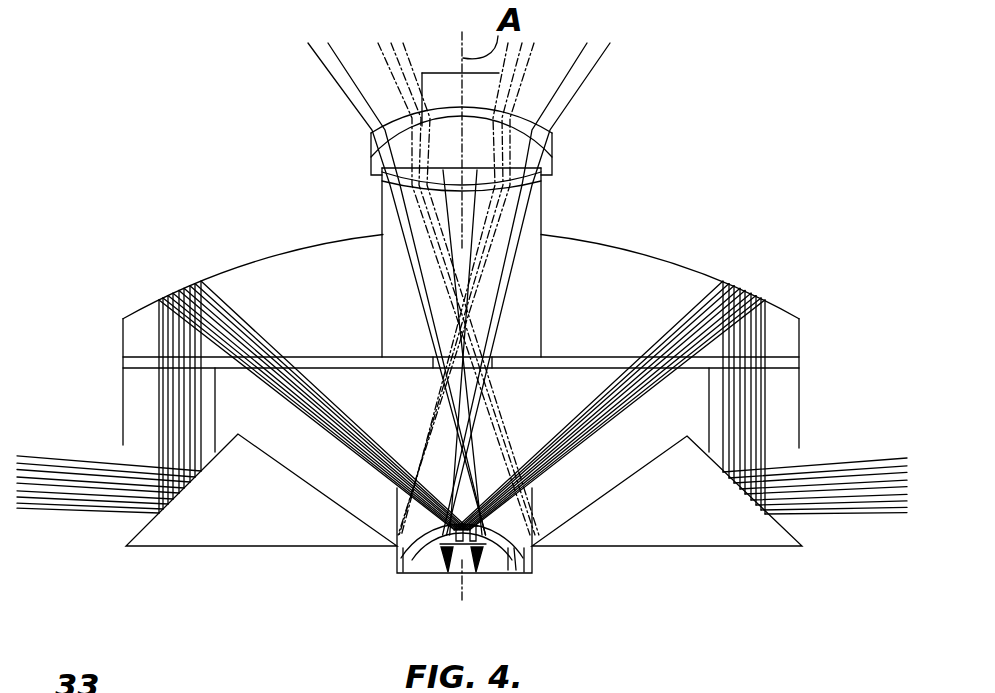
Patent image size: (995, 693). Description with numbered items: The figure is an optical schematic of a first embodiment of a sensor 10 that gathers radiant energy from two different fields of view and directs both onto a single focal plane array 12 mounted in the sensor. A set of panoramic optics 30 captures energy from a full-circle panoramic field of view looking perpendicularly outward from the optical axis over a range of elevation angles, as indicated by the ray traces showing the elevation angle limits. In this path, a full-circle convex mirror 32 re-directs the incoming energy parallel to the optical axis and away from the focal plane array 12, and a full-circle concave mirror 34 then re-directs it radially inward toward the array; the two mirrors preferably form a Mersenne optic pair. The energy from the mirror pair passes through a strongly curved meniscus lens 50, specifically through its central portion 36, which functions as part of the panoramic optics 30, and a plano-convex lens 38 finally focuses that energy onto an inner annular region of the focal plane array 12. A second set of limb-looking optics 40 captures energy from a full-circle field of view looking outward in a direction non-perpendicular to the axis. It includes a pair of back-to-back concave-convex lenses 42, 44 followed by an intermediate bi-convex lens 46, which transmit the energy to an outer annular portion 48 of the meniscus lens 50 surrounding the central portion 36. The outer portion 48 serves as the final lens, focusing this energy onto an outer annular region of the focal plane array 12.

The sensor 10 is at (628, 85).
The focal plane array 12 is at (418, 574).
The panoramic optics 30 is at (752, 286).
The convex mirror 32 is at (142, 525).
The concave mirror 34 is at (686, 270).
The central portion of the meniscus lens 36 is at (480, 530).
The plano-convex lens 38 is at (466, 556).
The limb-looking optics 40 is at (356, 125).
The concave-convex lens 42 is at (553, 140).
The concave-convex lens 44 is at (545, 174).
The intermediate bi-convex lens 46 is at (472, 360).
The outer annular portion of the meniscus lens 48 is at (422, 537).
The meniscus lens 50 is at (508, 552).